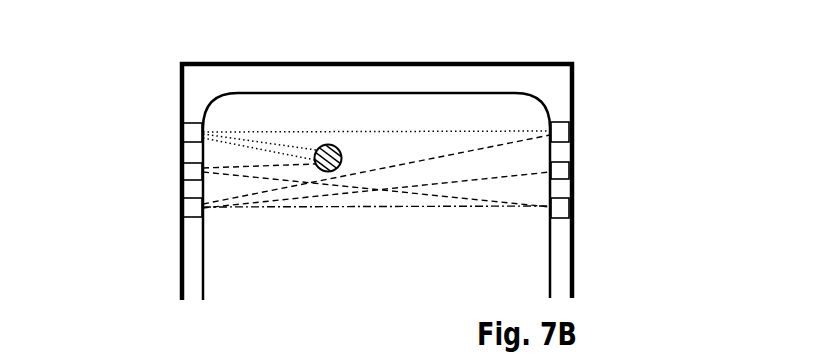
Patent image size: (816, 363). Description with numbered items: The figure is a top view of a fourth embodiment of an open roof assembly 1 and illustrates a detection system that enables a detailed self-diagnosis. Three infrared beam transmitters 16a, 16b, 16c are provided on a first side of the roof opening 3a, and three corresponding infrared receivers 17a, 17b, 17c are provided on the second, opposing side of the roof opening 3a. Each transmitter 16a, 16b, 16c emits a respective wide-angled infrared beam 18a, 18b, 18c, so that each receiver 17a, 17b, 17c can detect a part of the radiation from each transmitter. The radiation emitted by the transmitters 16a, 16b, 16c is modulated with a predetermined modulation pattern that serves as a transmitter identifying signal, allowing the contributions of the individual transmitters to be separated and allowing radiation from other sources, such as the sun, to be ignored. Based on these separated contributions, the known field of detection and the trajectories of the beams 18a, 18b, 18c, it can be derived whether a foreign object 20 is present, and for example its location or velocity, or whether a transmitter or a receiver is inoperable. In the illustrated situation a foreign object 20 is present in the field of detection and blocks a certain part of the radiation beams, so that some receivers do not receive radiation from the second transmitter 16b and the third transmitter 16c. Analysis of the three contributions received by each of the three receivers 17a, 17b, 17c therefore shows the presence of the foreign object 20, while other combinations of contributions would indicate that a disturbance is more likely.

The open roof assembly 1 is at (414, 68).
The roof opening 3a is at (523, 128).
The first infrared beam transmitter 16a is at (192, 207).
The second infrared beam transmitter 16b is at (183, 173).
The third infrared beam transmitter 16c is at (183, 132).
The first infrared receiver 17a is at (560, 207).
The second infrared receiver 17b is at (569, 173).
The third infrared receiver 17c is at (569, 131).
The first infrared beam 18a is at (293, 220).
The second infrared beam 18b is at (228, 182).
The third infrared beam 18c is at (253, 120).
The foreign object 20 is at (336, 146).